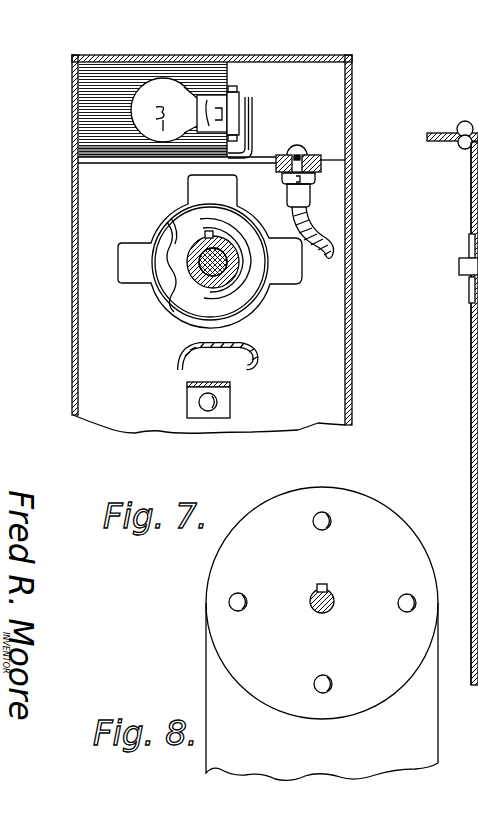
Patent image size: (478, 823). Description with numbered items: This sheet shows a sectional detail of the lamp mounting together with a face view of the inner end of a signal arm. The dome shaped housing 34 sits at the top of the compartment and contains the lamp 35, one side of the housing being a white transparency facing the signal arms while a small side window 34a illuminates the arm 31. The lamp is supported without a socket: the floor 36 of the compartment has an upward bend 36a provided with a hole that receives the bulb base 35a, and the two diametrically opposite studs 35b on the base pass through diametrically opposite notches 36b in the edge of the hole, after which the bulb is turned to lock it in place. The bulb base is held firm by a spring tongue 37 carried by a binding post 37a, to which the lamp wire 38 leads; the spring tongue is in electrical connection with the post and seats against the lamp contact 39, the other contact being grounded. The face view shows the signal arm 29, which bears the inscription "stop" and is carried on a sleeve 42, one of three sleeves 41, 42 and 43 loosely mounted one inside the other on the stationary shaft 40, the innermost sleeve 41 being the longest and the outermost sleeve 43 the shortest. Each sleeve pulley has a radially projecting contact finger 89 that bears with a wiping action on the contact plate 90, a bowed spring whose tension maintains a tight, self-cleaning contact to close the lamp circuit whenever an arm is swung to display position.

In FIG. 7, the signal arm 29 is at (471, 446).
In FIG. 8, the signal arm 29 is at (207, 673).
In FIG. 7, the signal arm 31 is at (471, 409).
In FIG. 7, the dome shaped housing 34 is at (266, 57).
In FIG. 7, the side window 34a is at (74, 106).
In FIG. 7, the lamp 35 is at (164, 110).
In FIG. 7, the bulb base 35a is at (212, 100).
In FIG. 7, the studs 35b is at (237, 88).
In FIG. 7, the floor 36 is at (282, 190).
In FIG. 7, the upward bend 36a is at (290, 153).
In FIG. 7, the notches 36b is at (231, 90).
In FIG. 7, the spring tongue 37 is at (253, 130).
In FIG. 7, the binding post 37a is at (298, 146).
In FIG. 7, the lamp wire 38 is at (320, 238).
In FIG. 7, the lamp contact 39 is at (253, 108).
In FIG. 8, the stationary shaft 40 is at (310, 599).
In FIG. 7, the sleeve 41 is at (471, 294).
In FIG. 7, the sleeve 42 is at (470, 226).
In FIG. 7, the sleeve 43 is at (459, 267).
In FIG. 7, the contact finger 89 is at (188, 186).
In FIG. 7, the contact plate 90 is at (182, 353).